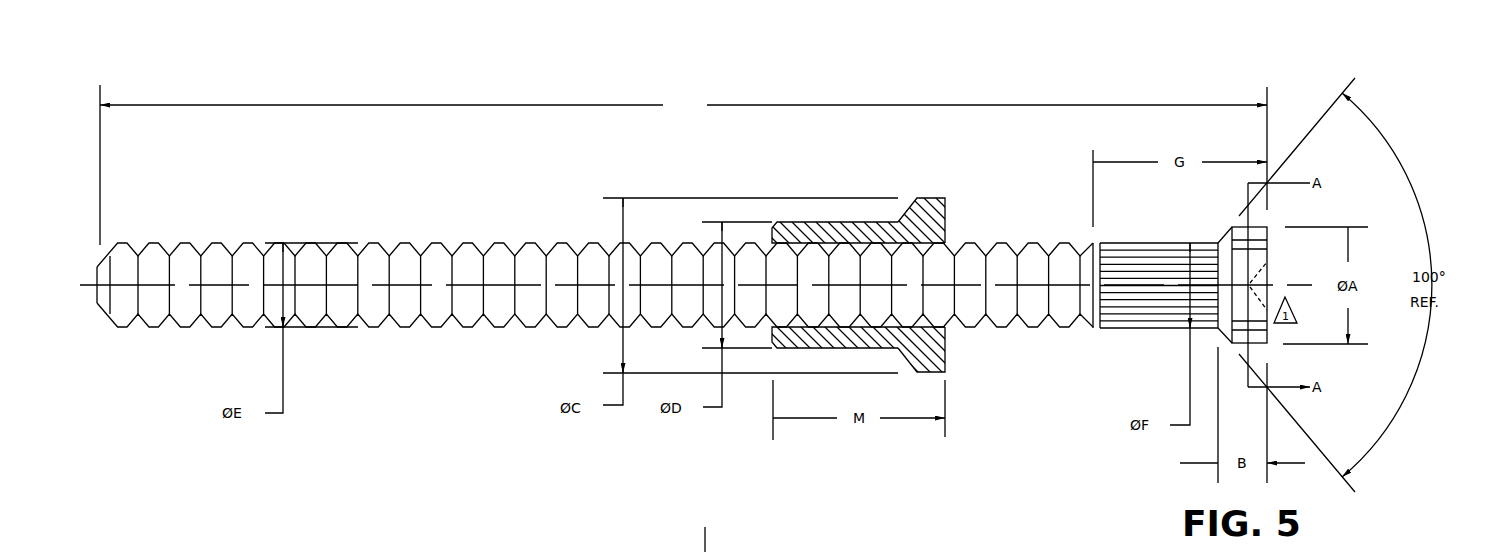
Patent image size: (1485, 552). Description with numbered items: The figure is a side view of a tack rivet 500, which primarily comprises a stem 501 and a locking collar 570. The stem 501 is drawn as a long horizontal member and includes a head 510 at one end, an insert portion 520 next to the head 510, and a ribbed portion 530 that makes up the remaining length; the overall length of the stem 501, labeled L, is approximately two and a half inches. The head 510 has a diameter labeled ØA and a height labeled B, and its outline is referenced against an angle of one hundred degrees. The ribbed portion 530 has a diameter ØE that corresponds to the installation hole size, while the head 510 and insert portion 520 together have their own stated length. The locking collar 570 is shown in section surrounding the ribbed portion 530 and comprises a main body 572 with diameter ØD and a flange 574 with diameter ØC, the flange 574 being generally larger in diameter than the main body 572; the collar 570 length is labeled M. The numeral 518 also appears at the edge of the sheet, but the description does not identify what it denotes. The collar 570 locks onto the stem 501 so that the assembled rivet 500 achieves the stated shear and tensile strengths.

The tack rivet 500 is at (764, 255).
The stem 501 is at (704, 80).
The head 510 is at (1283, 219).
The fastener component 518 is at (762, 539).
The insert portion 520 is at (1105, 354).
The ribbed portion 530 is at (416, 363).
The locking collar 570 is at (855, 226).
The main body 572 is at (850, 232).
The flange 574 is at (945, 207).